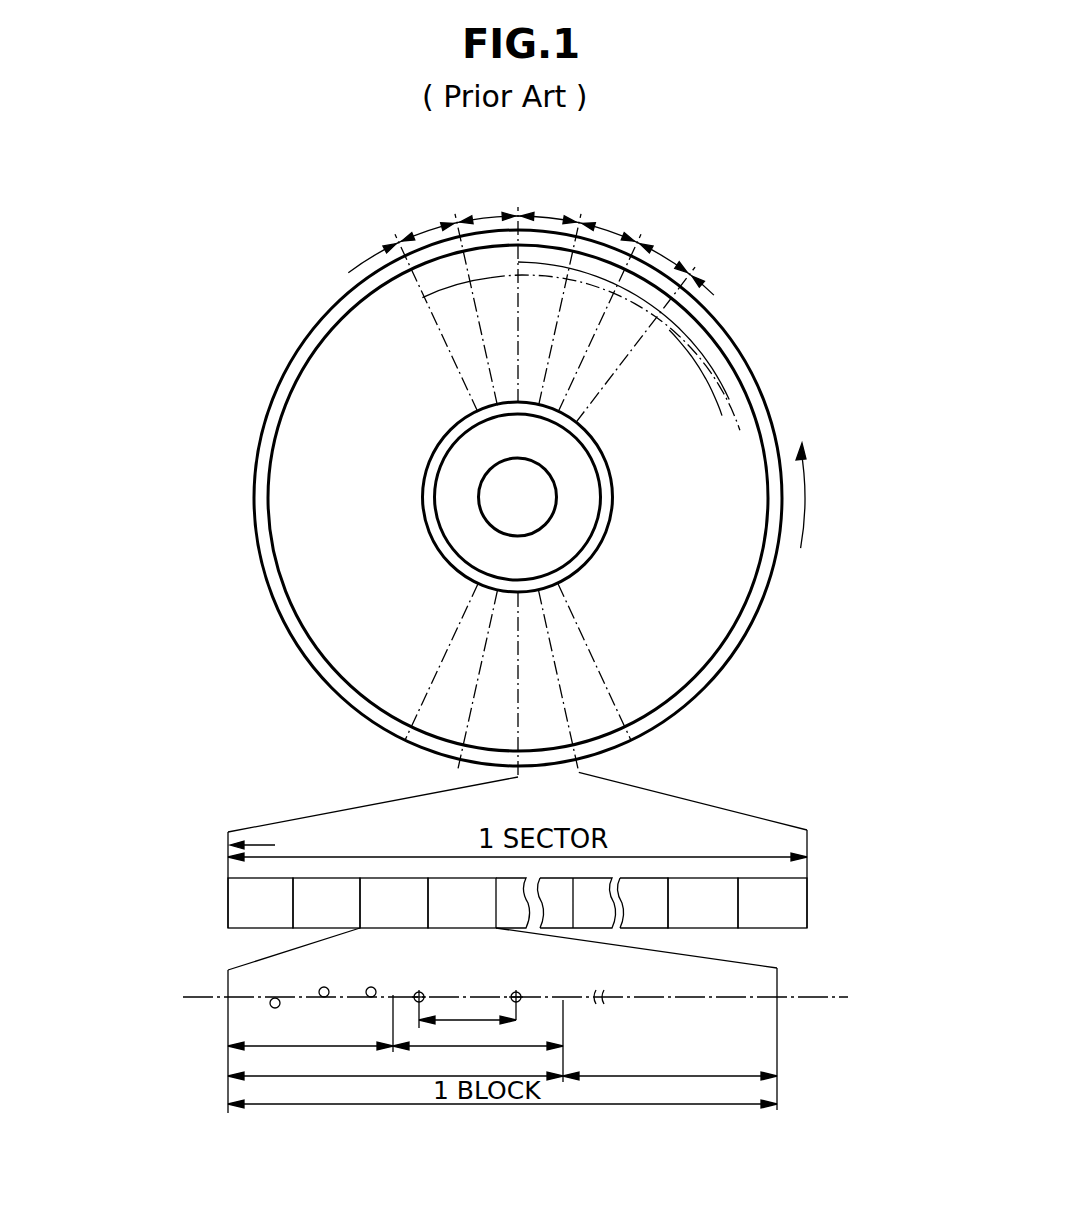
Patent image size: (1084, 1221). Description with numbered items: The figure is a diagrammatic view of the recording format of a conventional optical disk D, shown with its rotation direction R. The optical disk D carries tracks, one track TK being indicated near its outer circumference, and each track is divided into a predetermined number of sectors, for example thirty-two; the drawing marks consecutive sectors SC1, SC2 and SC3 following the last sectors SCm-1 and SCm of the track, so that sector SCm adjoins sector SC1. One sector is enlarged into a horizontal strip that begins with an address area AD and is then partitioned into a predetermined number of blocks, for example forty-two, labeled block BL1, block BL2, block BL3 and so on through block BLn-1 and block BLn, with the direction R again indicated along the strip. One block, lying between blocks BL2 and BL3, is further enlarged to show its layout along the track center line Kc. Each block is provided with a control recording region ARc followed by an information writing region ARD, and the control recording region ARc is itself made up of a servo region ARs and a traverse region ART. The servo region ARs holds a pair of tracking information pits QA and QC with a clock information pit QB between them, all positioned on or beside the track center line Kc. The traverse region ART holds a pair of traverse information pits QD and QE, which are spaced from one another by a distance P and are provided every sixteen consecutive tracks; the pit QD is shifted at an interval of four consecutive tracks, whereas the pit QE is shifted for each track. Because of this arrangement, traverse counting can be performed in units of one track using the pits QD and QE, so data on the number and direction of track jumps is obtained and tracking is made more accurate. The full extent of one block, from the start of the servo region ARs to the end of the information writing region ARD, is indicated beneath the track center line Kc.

The optical disk D is at (708, 694).
The track TK is at (713, 386).
The rotation direction R is at (529, 648).
The sector SCm-1 is at (441, 238).
The sector SCm is at (482, 215).
The sector SC1 is at (549, 215).
The sector SC2 is at (613, 228).
The sector SC3 is at (674, 255).
The address area AD is at (260, 903).
The block BL1 is at (326, 903).
The block BL2 is at (394, 903).
The block BL3 is at (462, 903).
The block BLn-1 is at (703, 903).
The block BLn is at (772, 903).
The track center line Kc is at (475, 1039).
The tracking information pit QA is at (276, 998).
The clock information pit QB is at (325, 987).
The tracking information pit QC is at (371, 987).
The traverse information pit QD is at (416, 992).
The traverse information pit QE is at (512, 992).
The distance P is at (467, 1011).
The servo region ARs is at (310, 1034).
The traverse region ART is at (478, 1034).
The control recording region ARc is at (395, 1064).
The information writing region ARD is at (670, 1064).